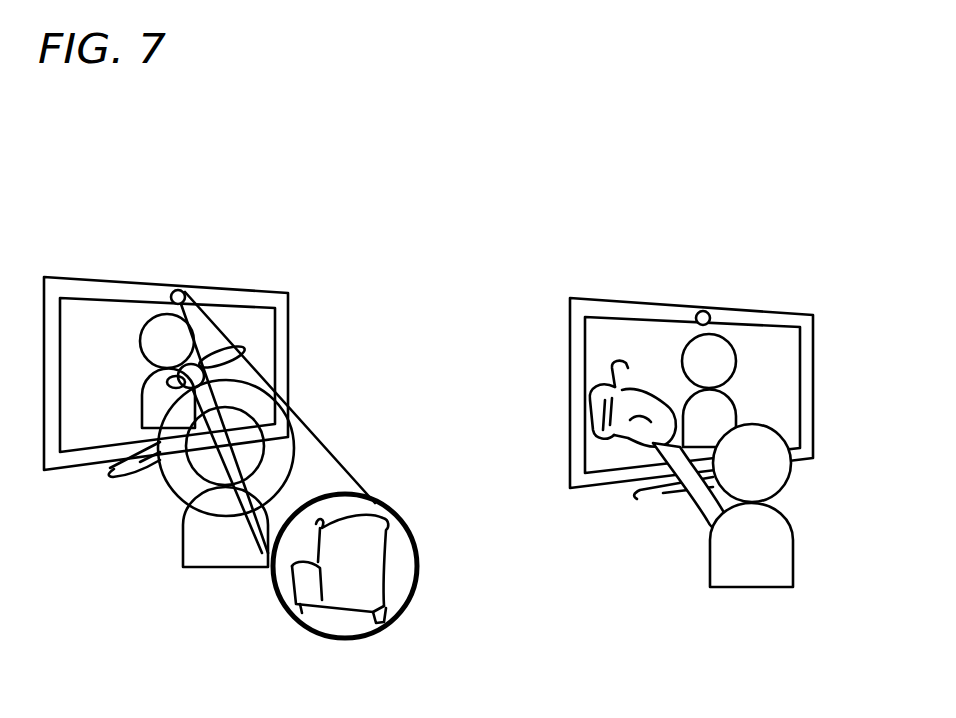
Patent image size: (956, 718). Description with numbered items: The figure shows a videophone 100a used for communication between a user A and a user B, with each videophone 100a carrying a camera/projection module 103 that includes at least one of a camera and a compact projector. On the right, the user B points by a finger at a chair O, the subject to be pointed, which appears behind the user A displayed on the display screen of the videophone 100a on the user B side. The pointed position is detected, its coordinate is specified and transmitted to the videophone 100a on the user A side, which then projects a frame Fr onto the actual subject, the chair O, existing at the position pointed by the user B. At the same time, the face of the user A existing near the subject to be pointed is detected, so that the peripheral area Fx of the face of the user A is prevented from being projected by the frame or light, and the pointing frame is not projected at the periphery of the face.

The videophone 100a is at (118, 280).
The camera/projection module 103 is at (192, 290).
The peripheral area of the face of user A Fx is at (292, 442).
The frame Fr is at (408, 537).
The chair O is at (396, 617).
The user A is at (203, 567).
The user B is at (793, 540).